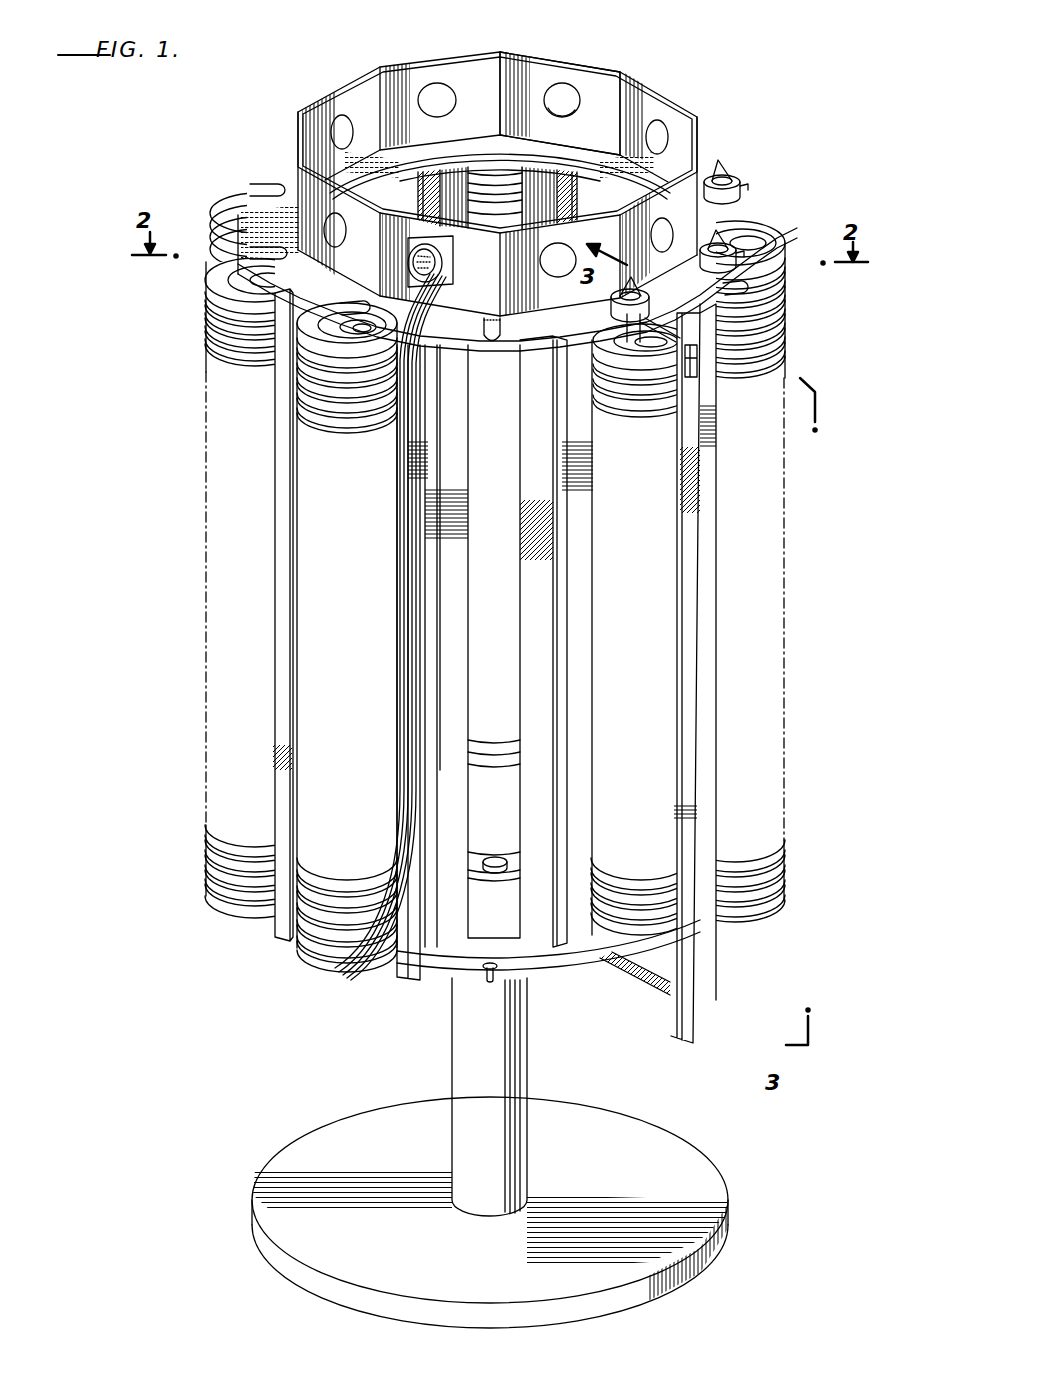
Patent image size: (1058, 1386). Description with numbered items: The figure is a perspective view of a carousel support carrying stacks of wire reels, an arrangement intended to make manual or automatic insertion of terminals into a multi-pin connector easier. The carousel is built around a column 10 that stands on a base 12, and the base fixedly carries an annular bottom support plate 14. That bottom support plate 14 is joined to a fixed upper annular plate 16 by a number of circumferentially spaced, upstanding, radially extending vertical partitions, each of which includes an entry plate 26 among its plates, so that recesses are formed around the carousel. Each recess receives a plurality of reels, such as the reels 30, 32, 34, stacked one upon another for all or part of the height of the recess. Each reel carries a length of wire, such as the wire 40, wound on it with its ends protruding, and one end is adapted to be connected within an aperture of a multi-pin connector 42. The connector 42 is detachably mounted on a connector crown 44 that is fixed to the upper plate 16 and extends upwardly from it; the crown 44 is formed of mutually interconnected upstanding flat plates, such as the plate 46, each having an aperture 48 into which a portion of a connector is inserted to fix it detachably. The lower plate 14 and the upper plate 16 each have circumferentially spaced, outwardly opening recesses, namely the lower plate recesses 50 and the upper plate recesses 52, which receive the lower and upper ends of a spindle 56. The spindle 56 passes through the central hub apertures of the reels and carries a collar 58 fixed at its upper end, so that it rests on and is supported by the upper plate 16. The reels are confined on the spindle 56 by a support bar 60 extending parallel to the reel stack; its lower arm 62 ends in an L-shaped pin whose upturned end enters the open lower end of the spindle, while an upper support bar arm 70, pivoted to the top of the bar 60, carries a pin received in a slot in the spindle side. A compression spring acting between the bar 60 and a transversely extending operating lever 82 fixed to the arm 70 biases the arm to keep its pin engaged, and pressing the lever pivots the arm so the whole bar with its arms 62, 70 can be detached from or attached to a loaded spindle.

The column 10 is at (528, 1061).
The base 12 is at (710, 1177).
The bottom support plate 14 is at (443, 970).
The upper annular plate 16 is at (541, 331).
The entry plate 26 is at (233, 223).
The reel 30 is at (312, 952).
The reel 32 is at (313, 935).
The reel 34 is at (303, 913).
The wire 40 is at (352, 975).
The multi-pin connector 42 is at (453, 256).
The connector crown 44 is at (490, 34).
The plate 46 is at (526, 66).
The aperture 48 is at (563, 94).
The lower plate recess 50 is at (490, 982).
The upper plate recess 52 is at (489, 342).
The spindle 56 is at (623, 333).
The collar 58 is at (742, 248).
The support bar 60 is at (679, 612).
The lower arm 62 is at (656, 985).
The upper support bar arm 70 is at (652, 310).
The operating lever 82 is at (697, 370).